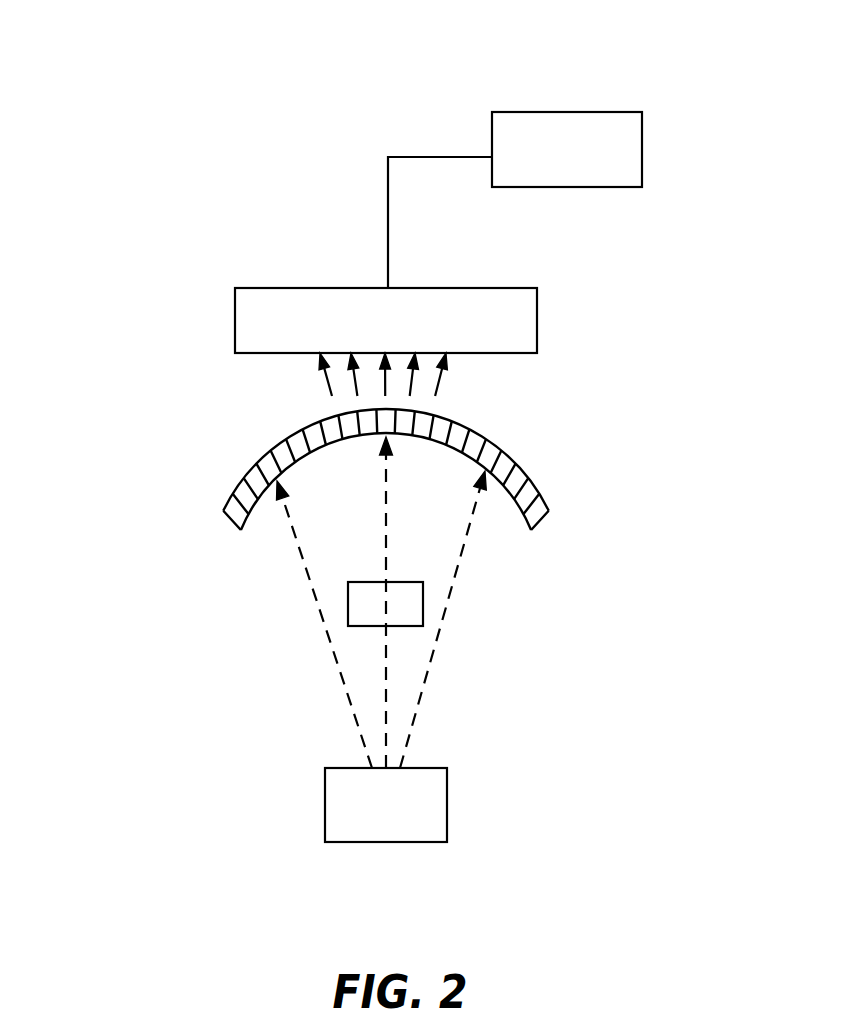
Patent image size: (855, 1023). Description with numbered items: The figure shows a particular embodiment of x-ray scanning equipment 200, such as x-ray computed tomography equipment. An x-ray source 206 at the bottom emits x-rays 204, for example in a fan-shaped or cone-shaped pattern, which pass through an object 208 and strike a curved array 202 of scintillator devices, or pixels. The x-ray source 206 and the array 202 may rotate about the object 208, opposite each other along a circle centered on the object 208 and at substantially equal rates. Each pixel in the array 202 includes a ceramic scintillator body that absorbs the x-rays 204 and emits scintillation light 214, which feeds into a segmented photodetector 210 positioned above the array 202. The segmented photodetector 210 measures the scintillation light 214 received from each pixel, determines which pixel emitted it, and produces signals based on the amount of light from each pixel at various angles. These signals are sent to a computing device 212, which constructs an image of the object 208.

The x-ray scanning equipment 200 is at (110, 92).
The array of scintillator devices 202 is at (275, 448).
The x-rays 204 is at (305, 580).
The x-ray source 206 is at (325, 798).
The object 208 is at (373, 580).
The segmented photodetector 210 is at (293, 287).
The computing device 212 is at (535, 110).
The scintillation light 214 is at (437, 382).